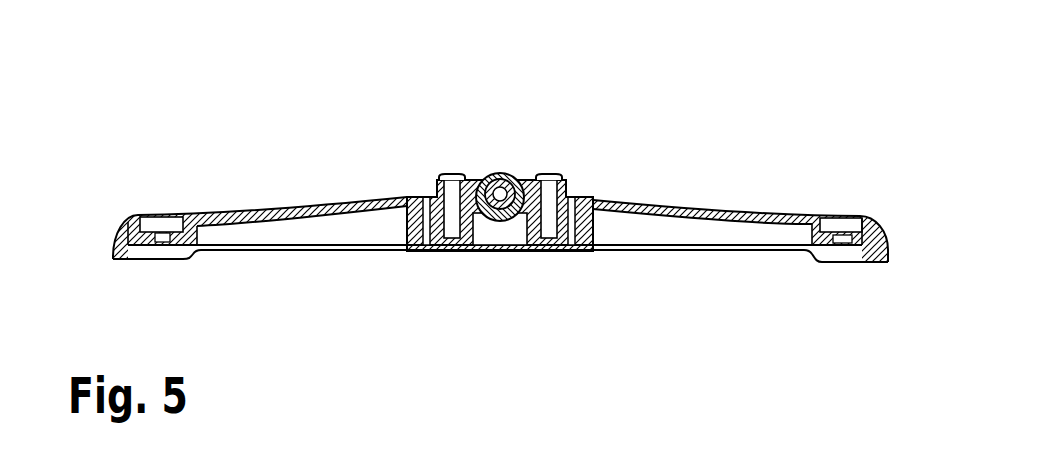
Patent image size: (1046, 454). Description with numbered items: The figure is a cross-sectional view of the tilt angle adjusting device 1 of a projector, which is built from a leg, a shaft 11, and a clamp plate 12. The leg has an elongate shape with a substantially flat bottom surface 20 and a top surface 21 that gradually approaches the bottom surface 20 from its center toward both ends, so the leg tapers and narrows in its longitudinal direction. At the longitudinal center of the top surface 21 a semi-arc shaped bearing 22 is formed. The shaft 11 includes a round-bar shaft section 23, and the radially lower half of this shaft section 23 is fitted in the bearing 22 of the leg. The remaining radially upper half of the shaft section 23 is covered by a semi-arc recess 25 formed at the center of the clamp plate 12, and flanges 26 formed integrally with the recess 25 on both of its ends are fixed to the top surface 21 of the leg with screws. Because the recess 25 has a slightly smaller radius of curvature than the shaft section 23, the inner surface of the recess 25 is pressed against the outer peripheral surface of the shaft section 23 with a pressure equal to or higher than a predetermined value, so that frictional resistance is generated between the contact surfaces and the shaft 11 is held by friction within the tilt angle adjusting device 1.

The tilt angle adjusting device 1 is at (713, 183).
The shaft 11 is at (507, 172).
The clamp plate 12 is at (464, 171).
The bottom surface 20 is at (322, 252).
The top surface 21 is at (323, 202).
The bearing 22 is at (512, 214).
The shaft section 23 is at (488, 172).
The recess 25 is at (521, 176).
The flanges 26 is at (432, 186).